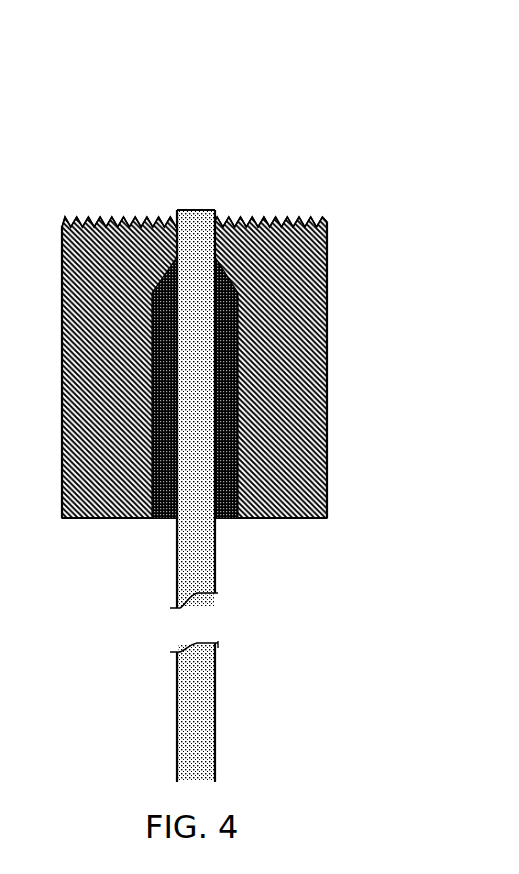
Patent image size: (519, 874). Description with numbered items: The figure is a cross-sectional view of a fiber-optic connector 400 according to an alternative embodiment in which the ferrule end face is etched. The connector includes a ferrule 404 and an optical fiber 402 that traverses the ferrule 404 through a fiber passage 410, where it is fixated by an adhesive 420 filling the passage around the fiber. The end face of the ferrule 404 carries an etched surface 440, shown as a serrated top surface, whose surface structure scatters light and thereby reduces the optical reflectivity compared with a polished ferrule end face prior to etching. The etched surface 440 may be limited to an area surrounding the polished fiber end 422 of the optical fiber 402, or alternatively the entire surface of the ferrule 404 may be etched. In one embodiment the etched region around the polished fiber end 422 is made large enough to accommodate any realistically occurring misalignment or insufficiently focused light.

The fiber-optic connector 400 is at (396, 69).
The optical fiber 402 is at (193, 550).
The ferrule 404 is at (320, 283).
The fiber passage 410 is at (223, 505).
The adhesive 420 is at (162, 497).
The polished fiber end 422 is at (193, 210).
The etched surface 440 is at (322, 218).